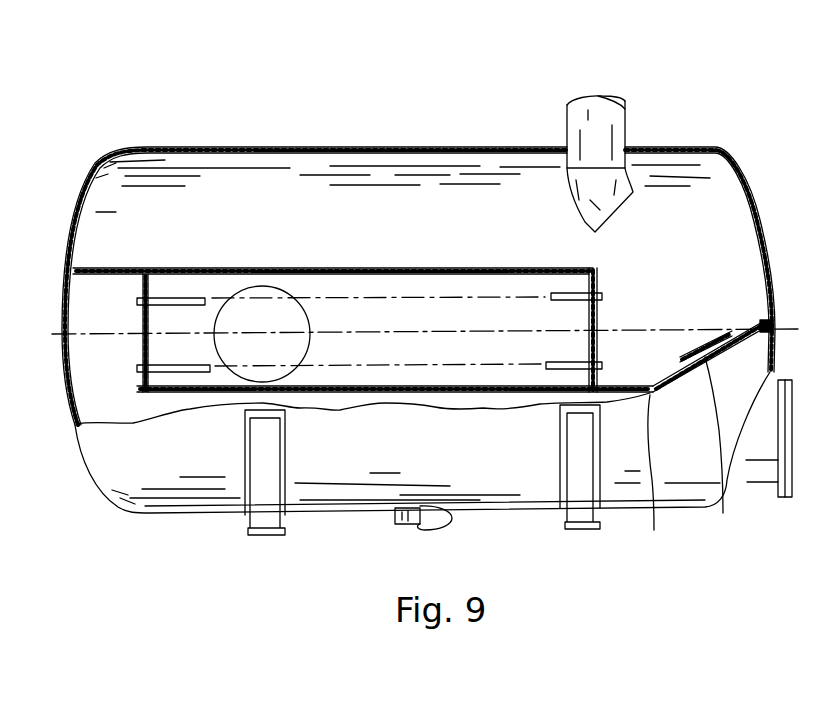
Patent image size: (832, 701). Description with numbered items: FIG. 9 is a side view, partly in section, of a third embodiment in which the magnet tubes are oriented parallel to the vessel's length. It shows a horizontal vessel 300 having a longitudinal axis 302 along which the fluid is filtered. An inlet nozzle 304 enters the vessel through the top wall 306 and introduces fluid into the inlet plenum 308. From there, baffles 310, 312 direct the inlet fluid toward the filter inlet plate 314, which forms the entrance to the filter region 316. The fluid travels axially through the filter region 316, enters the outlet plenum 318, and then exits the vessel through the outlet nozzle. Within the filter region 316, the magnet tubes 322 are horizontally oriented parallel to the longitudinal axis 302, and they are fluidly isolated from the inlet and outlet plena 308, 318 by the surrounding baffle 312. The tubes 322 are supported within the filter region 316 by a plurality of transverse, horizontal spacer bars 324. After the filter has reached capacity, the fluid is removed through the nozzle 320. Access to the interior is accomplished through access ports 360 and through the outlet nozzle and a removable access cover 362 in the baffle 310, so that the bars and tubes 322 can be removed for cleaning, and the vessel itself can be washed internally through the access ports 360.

The horizontal vessel 300 is at (316, 128).
The longitudinal axis 302 is at (781, 332).
The inlet nozzle 304 is at (627, 118).
The top wall 306 is at (440, 148).
The inlet plenum 308 is at (740, 254).
The baffle 310 is at (653, 528).
The baffle 312 is at (440, 267).
The filter inlet plate 314 is at (598, 280).
The filter region 316 is at (521, 327).
The outlet plenum 318 is at (121, 416).
The nozzle 320 is at (451, 516).
The magnet tubes 322 is at (187, 297).
The spacer bars 324 is at (831, 200).
The access ports 360 is at (780, 500).
The removable access cover 362 is at (723, 514).